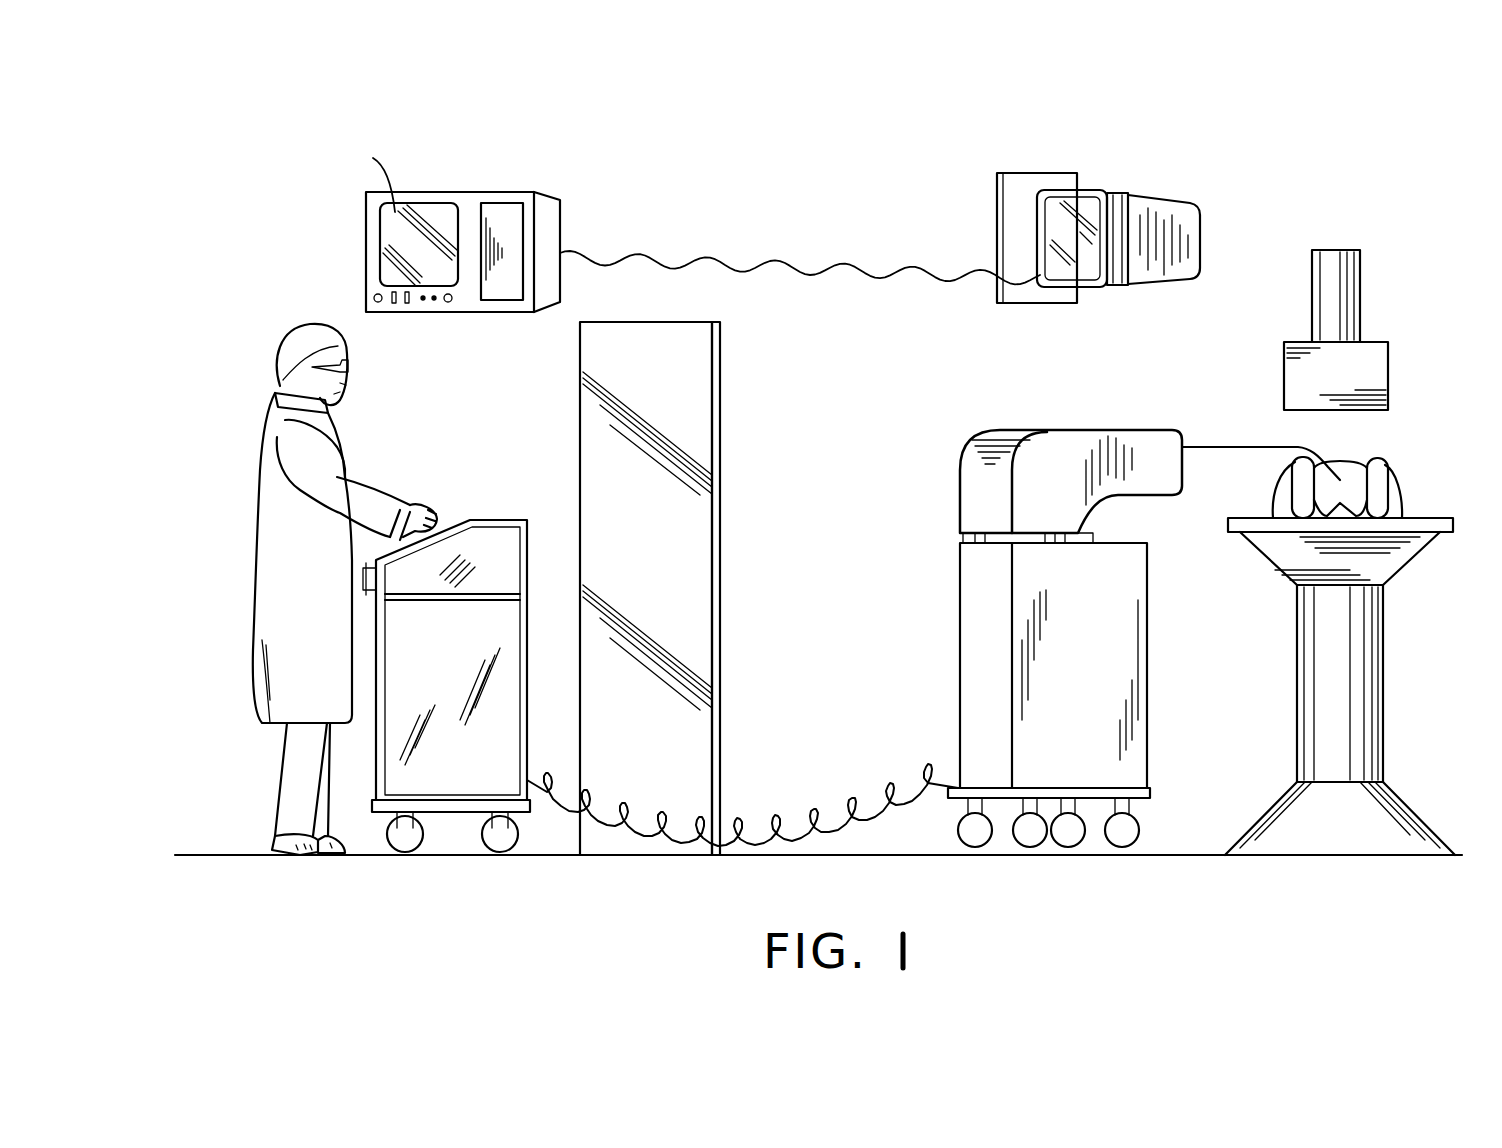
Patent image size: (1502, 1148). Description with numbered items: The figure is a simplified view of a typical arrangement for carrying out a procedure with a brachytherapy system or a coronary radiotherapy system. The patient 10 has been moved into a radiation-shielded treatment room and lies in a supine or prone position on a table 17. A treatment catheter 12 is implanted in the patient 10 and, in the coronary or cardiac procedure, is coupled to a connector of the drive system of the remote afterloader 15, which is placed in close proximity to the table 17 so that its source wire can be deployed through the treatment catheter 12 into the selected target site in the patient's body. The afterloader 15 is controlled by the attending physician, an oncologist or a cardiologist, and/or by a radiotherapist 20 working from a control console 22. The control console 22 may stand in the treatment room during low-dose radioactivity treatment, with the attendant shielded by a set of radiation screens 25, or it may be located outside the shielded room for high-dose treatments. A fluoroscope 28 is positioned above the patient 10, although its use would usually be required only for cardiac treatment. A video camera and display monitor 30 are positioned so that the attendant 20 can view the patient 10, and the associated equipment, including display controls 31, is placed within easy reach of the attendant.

The patient 10 is at (1350, 461).
The treatment catheter 12 is at (1240, 444).
The remote afterloader 15 is at (1088, 730).
The table 17 is at (1350, 800).
The attending cardiologist and/or radiotherapist 20 is at (290, 672).
The control console 22 is at (500, 773).
The radiation screens 25 is at (700, 410).
The fluoroscope 28 is at (1330, 262).
The display monitor 30 is at (1077, 245).
The display controls 31 is at (452, 298).